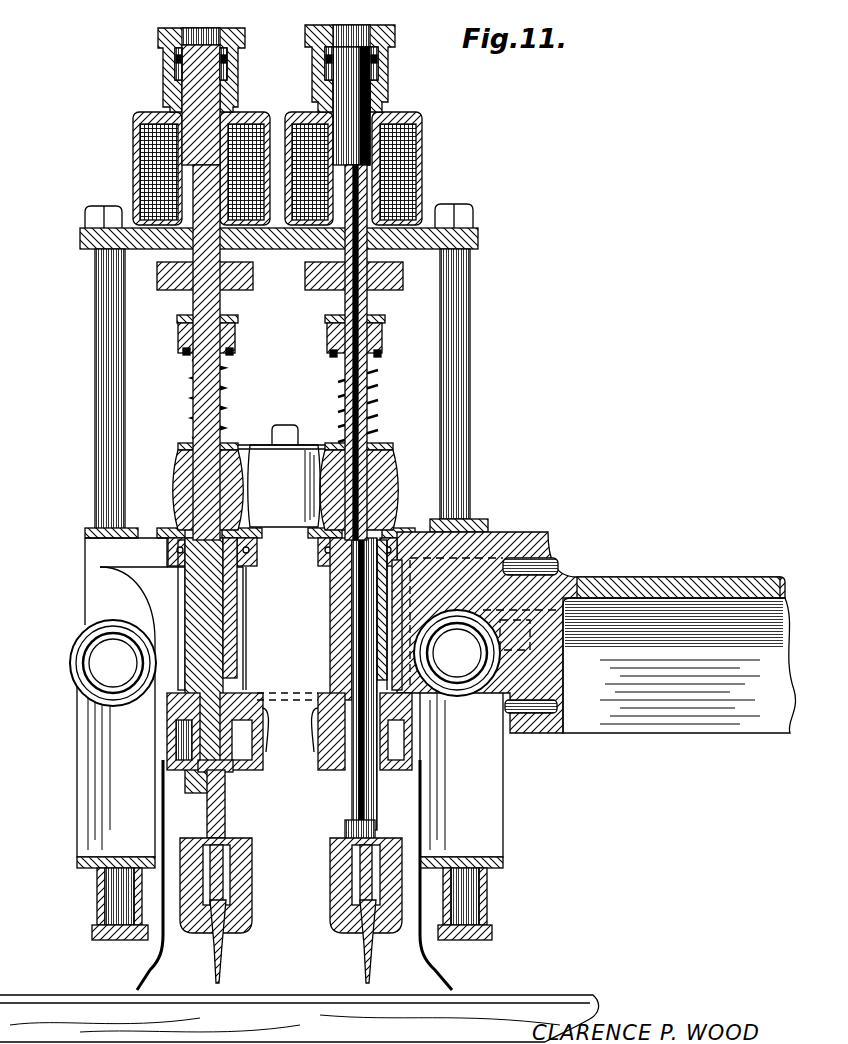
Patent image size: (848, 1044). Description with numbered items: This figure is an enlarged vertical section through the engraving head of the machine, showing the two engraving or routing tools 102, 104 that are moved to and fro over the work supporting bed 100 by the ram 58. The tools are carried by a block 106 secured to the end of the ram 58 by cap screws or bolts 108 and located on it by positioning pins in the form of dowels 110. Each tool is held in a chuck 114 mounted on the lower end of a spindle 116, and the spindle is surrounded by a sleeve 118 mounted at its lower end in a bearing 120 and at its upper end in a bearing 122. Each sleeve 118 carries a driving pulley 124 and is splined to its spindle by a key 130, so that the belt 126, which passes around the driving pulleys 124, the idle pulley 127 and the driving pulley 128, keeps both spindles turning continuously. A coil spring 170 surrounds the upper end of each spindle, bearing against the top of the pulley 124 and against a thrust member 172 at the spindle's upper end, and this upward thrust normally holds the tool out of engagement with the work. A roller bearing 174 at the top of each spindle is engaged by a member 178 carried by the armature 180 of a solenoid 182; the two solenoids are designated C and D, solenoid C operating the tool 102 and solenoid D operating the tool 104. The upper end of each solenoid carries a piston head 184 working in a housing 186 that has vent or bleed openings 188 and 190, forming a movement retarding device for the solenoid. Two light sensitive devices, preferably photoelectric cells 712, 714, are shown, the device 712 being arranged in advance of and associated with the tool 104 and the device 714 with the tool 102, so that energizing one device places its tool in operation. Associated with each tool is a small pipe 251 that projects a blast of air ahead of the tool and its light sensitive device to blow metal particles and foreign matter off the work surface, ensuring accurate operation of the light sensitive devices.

The vent or bleed opening 188 is at (200, 30).
The piston head 184 is at (162, 33).
The housing 186 is at (176, 62).
The vent or bleed opening 190 is at (228, 60).
The armature 180 is at (205, 88).
The solenoid 182 is at (150, 133).
The solenoid D is at (133, 180).
The solenoid C is at (418, 170).
The member 178 is at (196, 300).
The roller bearing 174 is at (238, 330).
The thrust member 172 is at (236, 350).
The coil spring 170 is at (226, 405).
The driving pulley 128 is at (176, 447).
The idle pulley 127 is at (262, 445).
The belt 126 is at (394, 448).
The driving pulley 124 is at (178, 480).
The block 106 is at (495, 532).
The dowel 110 is at (530, 558).
The cap screw or bolt 108 is at (568, 580).
The ram 58 is at (668, 735).
The sleeve 118 is at (185, 600).
The bearing 122 is at (318, 560).
The key 130 is at (330, 605).
The bearing 120 is at (289, 731).
The spindle 116 is at (350, 810).
The chuck 114 is at (246, 930).
The engraving or routing tool 104 is at (224, 976).
The engraving or routing tool 102 is at (362, 975).
The pipe 251 is at (152, 983).
The work supporting bed 100 is at (280, 1042).
The light sensitive device 712 is at (113, 663).
The light sensitive device 714 is at (457, 653).